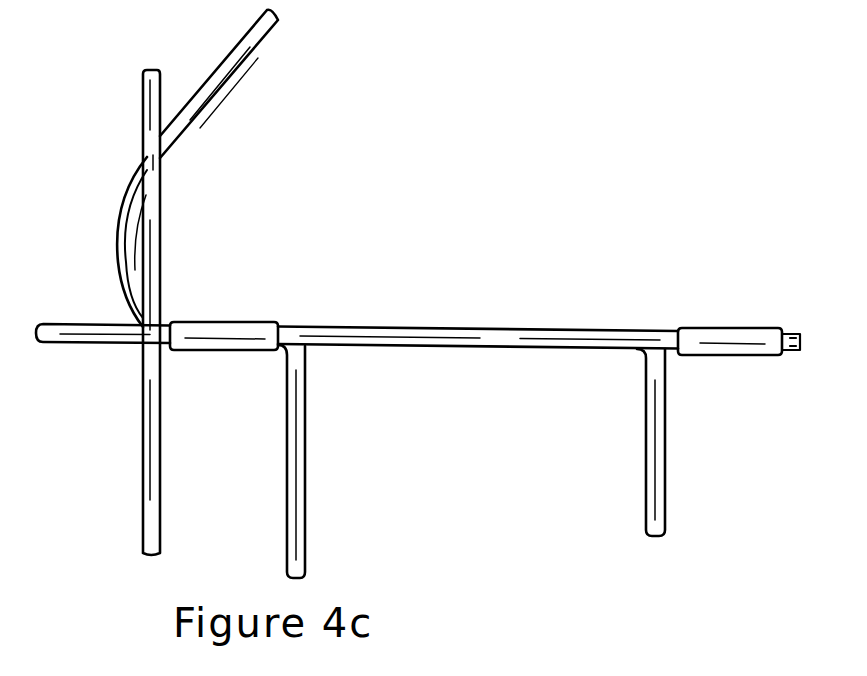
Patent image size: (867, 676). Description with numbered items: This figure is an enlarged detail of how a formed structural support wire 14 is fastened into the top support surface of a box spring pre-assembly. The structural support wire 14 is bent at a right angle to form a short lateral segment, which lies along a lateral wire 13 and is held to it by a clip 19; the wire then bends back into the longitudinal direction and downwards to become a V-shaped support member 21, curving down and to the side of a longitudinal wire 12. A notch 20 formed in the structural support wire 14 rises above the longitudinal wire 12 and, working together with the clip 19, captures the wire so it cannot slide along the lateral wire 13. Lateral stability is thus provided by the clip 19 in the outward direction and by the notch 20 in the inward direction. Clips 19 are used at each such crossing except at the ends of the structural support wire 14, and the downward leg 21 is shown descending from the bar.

The longitudinal wire 12 is at (145, 90).
The lateral wire 13 is at (490, 330).
The structural support wire 14 is at (270, 42).
The clip 19 is at (232, 320).
The notch 20 is at (116, 230).
The leg 21 is at (307, 540).